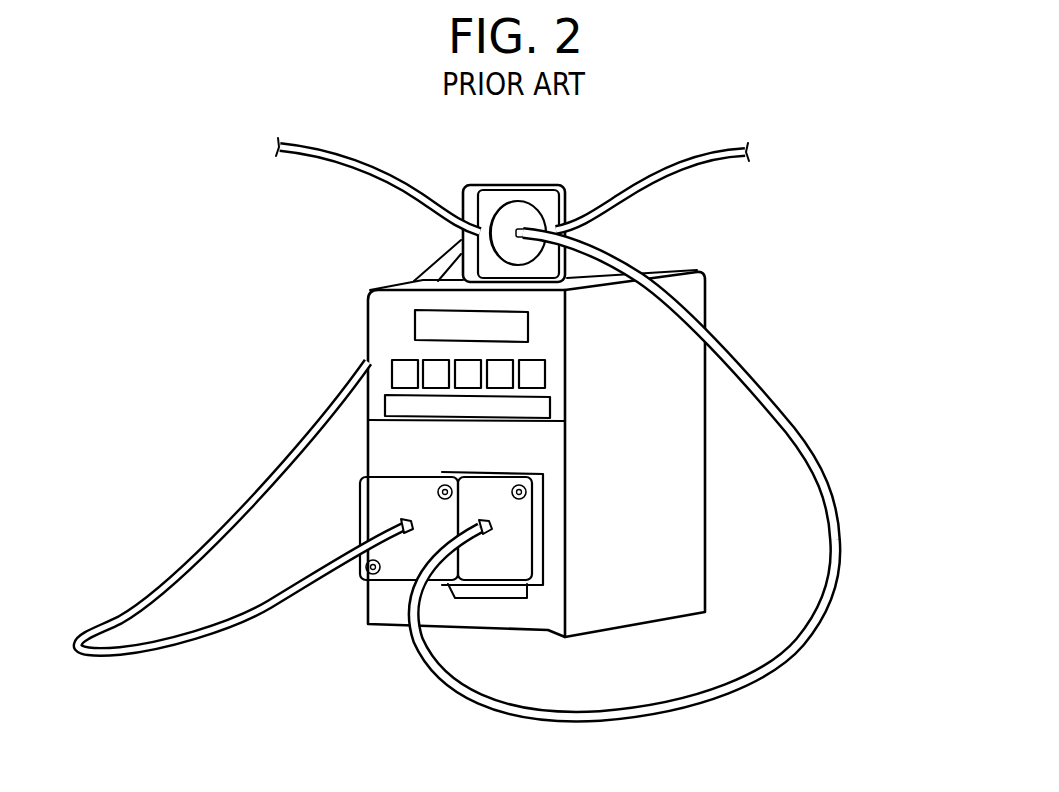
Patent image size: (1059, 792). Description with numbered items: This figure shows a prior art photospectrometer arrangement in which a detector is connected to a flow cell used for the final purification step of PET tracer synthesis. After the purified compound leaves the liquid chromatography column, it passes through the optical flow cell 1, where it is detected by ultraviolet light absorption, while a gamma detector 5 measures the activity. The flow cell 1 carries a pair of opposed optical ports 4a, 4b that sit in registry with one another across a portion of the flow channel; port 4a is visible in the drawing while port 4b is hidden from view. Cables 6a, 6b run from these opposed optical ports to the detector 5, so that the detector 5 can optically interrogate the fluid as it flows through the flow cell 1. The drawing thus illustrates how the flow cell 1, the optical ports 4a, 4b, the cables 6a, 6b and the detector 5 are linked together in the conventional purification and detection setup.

The optical flow cell 1 is at (436, 165).
The optical port 4a is at (530, 215).
The optical port 4b is at (440, 241).
The gamma detector 5 is at (350, 289).
The cable 6a is at (210, 545).
The cable 6b is at (823, 490).